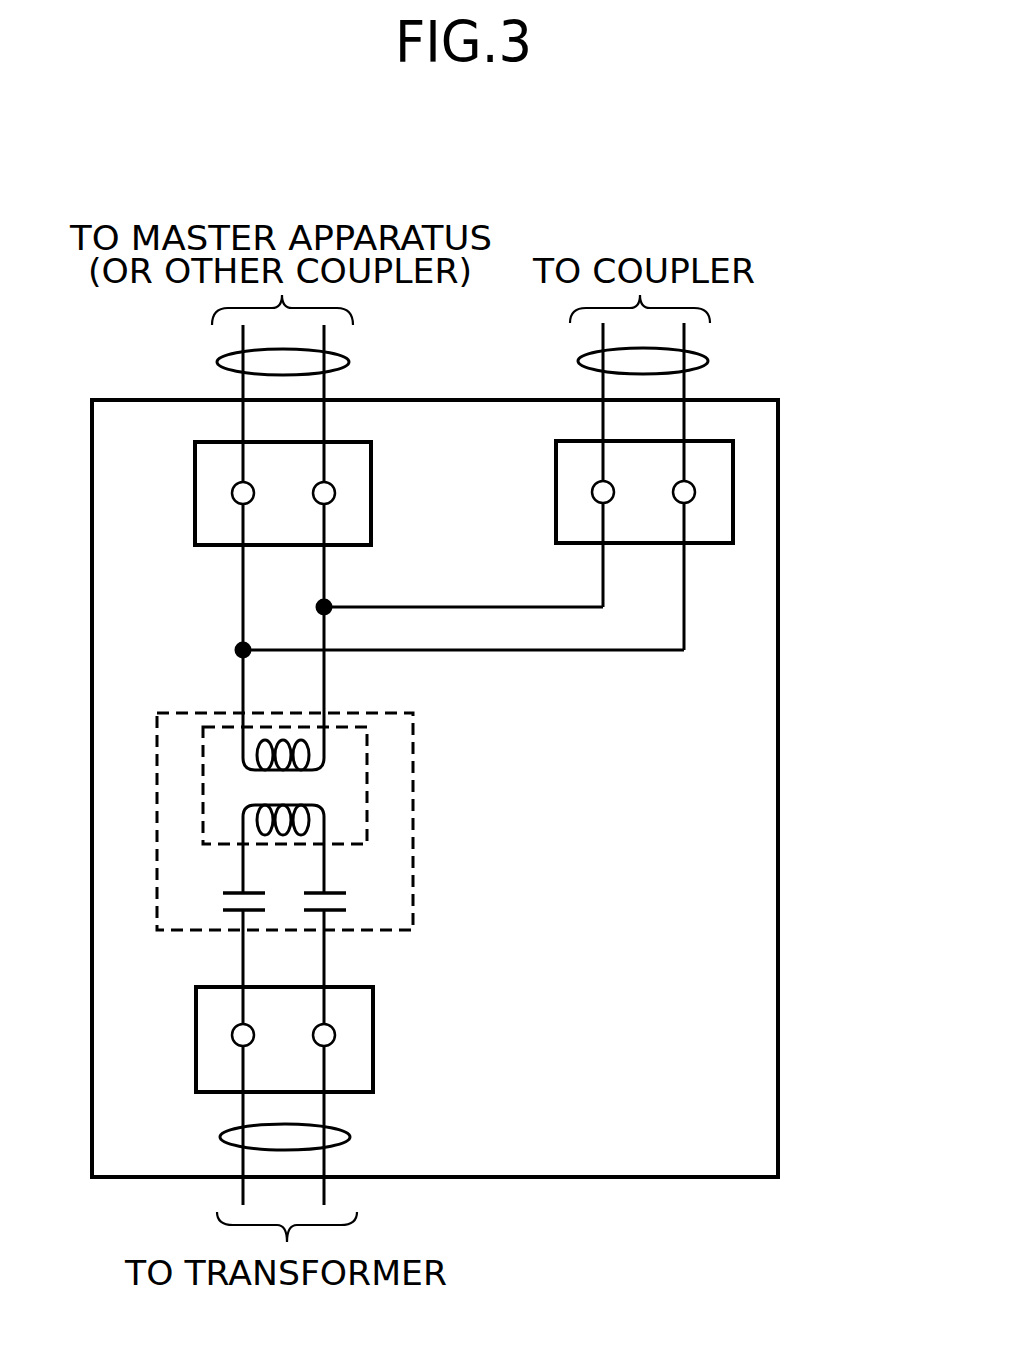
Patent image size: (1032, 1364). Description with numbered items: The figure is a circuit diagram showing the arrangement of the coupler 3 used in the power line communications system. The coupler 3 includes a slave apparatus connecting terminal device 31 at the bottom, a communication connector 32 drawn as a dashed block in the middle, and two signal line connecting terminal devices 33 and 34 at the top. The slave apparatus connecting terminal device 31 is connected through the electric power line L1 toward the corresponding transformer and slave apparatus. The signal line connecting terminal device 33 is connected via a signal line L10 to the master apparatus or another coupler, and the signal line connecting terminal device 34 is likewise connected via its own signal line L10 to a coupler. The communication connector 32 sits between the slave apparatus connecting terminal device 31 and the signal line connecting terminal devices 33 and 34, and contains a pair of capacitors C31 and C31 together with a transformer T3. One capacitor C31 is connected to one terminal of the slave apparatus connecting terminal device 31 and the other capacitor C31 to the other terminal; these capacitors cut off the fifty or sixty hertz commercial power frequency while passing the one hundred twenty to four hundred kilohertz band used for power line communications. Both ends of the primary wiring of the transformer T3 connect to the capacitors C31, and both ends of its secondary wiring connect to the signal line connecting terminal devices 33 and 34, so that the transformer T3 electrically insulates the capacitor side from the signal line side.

The coupler 3 is at (778, 453).
The slave apparatus connecting terminal device 31 is at (373, 1047).
The communication connector 32 is at (413, 877).
The signal line connecting terminal device 33 is at (371, 518).
The signal line connecting terminal device 34 is at (733, 522).
The transformer T3 is at (367, 790).
The capacitor C31 is at (255, 912).
The signal line L10 is at (349, 362).
The electric power line L1 is at (350, 1137).